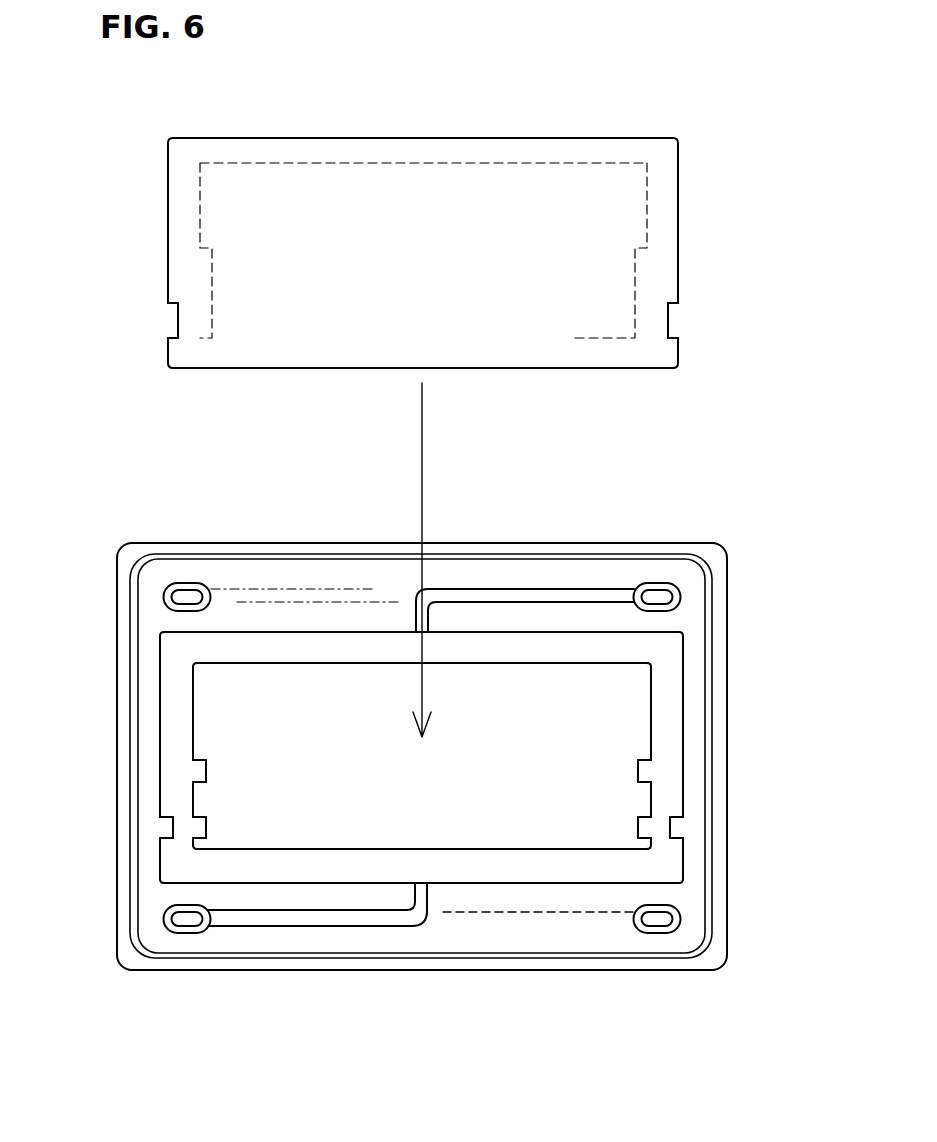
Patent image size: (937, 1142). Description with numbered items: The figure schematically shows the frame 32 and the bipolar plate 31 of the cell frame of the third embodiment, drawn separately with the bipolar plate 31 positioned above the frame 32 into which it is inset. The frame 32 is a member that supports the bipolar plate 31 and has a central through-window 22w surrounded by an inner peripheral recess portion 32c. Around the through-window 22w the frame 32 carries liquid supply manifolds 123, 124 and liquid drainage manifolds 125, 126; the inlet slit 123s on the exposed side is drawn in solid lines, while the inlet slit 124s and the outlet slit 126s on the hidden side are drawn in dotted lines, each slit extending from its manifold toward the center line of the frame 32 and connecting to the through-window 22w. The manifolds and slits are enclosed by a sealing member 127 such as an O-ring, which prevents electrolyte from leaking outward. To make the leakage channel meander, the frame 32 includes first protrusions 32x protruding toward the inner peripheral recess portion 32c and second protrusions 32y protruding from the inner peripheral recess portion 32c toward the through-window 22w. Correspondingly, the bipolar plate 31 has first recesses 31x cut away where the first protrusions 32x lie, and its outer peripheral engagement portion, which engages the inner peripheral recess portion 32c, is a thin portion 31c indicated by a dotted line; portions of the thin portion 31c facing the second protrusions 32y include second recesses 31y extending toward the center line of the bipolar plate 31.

The bipolar plate 31 is at (423, 222).
The thin portion 31c is at (353, 250).
The first recesses 31x is at (422, 335).
The second recesses 31y is at (421, 339).
The frame 32 is at (401, 704).
The inner peripheral recess portion 32c is at (422, 749).
The first protrusions 32x is at (422, 868).
The second protrusions 32y is at (422, 799).
The through-window 22w is at (359, 757).
The liquid supply manifold 123 is at (187, 965).
The inlet slit 123s is at (313, 974).
The liquid supply manifold 124 is at (663, 980).
The inlet slit 124s is at (525, 752).
The liquid drainage manifold 125 is at (647, 536).
The liquid drainage manifold 126 is at (187, 543).
The outlet slit 126s is at (305, 529).
The sealing member 127 is at (465, 756).